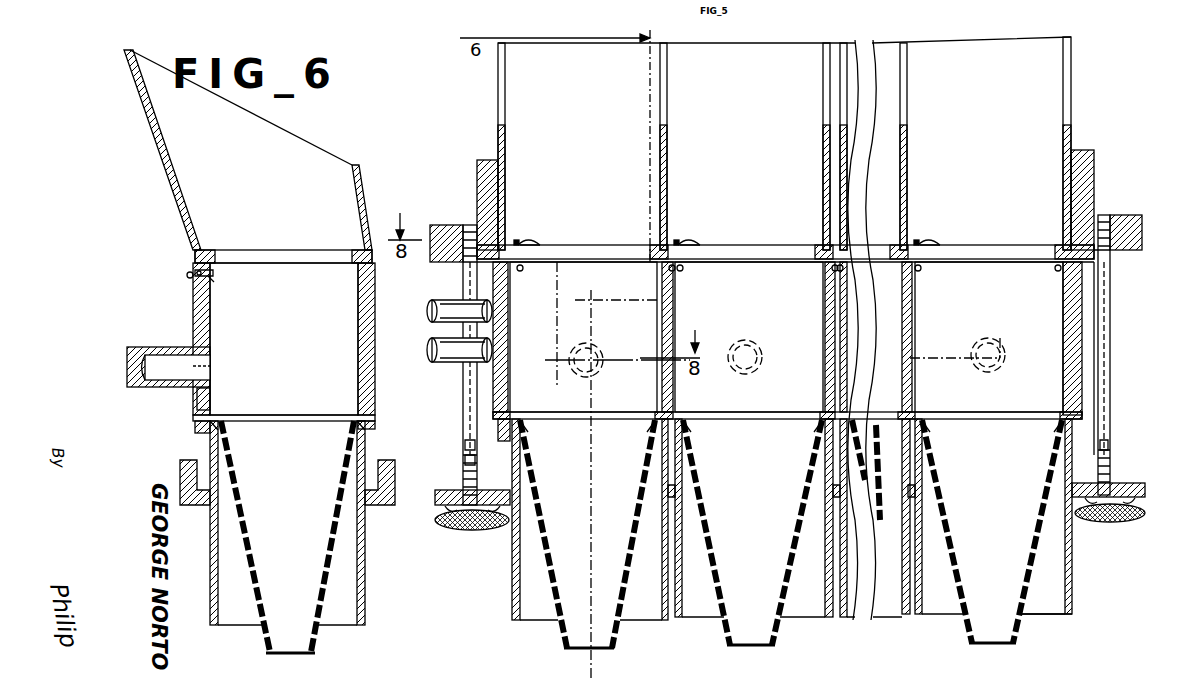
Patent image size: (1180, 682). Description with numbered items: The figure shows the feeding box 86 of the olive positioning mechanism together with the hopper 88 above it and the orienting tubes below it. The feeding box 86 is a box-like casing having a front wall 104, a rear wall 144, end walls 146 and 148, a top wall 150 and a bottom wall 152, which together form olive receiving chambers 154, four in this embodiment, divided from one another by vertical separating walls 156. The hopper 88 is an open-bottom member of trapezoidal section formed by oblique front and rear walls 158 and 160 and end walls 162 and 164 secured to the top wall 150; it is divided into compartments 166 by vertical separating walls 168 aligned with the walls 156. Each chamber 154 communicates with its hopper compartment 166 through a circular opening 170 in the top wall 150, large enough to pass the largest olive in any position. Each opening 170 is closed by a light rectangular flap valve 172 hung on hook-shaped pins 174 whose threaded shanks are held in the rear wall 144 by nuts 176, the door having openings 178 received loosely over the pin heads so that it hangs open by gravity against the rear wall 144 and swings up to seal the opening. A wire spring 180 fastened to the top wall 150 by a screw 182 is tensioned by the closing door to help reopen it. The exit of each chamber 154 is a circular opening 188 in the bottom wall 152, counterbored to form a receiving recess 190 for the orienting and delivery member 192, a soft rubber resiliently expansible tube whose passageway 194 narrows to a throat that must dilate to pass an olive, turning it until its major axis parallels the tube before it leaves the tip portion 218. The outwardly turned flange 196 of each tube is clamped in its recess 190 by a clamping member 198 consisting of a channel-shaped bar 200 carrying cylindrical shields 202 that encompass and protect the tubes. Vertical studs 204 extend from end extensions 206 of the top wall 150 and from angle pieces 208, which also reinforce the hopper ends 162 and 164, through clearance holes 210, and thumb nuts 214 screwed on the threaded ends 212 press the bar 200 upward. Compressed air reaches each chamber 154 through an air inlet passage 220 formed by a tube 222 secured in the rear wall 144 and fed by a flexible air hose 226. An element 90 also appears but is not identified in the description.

In FIG. 5, the feeding box 86 is at (1086, 316).
In FIG. 5, the hopper 88 is at (1072, 66).
In FIG. 5, the lower frame rail 90 is at (1058, 619).
In FIG. 6, the front wall 104 is at (370, 386).
In FIG. 5, the front wall 104 is at (409, 366).
In FIG. 6, the rear wall 144 is at (197, 405).
In FIG. 5, the end wall 146 is at (493, 386).
In FIG. 5, the end wall 148 is at (1078, 378).
In FIG. 6, the top wall 150 is at (193, 262).
In FIG. 5, the top wall 150 is at (442, 288).
In FIG. 6, the bottom wall 152 is at (197, 428).
In FIG. 5, the bottom wall 152 is at (498, 436).
In FIG. 6, the olive receiving chamber 154 is at (356, 348).
In FIG. 5, the olive receiving chamber 154 is at (572, 418).
In FIG. 6, the vertical separating wall 156 is at (287, 311).
In FIG. 5, the vertical separating wall 156 is at (668, 305).
In FIG. 6, the hopper front wall 158 is at (356, 206).
In FIG. 6, the hopper rear wall 160 is at (150, 127).
In FIG. 5, the hopper end wall 162 is at (498, 108).
In FIG. 5, the hopper end wall 164 is at (1071, 104).
In FIG. 6, the hopper compartment 166 is at (348, 200).
In FIG. 5, the hopper compartment 166 is at (658, 119).
In FIG. 6, the vertical separating wall 168 is at (264, 236).
In FIG. 5, the vertical separating wall 168 is at (668, 176).
In FIG. 6, the circular opening 170 is at (304, 262).
In FIG. 5, the circular opening 170 is at (600, 256).
In FIG. 6, the flap valve 172 is at (210, 393).
In FIG. 5, the flap valve 172 is at (632, 328).
In FIG. 6, the hook-shaped pin 174 is at (213, 273).
In FIG. 5, the hook-shaped pin 174 is at (520, 271).
In FIG. 6, the nut 176 is at (190, 279).
In FIG. 6, the opening 178 is at (213, 281).
In FIG. 5, the wire spring 180 is at (541, 241).
In FIG. 5, the screw 182 is at (530, 240).
In FIG. 6, the circular opening 188 is at (326, 420).
In FIG. 5, the circular opening 188 is at (640, 418).
In FIG. 6, the receiving recess 190 is at (375, 424).
In FIG. 5, the receiving recess 190 is at (494, 423).
In FIG. 6, the orienting and delivery member 192 is at (228, 487).
In FIG. 5, the orienting and delivery member 192 is at (645, 485).
In FIG. 6, the passageway 194 is at (300, 497).
In FIG. 5, the passageway 194 is at (577, 473).
In FIG. 6, the outwardly turned flange 196 is at (212, 432).
In FIG. 5, the outwardly turned flange 196 is at (512, 414).
In FIG. 6, the clamping member 198 is at (196, 509).
In FIG. 5, the clamping member 198 is at (448, 497).
In FIG. 6, the channel-shaped bar 200 is at (372, 509).
In FIG. 6, the cylindrical shield 202 is at (365, 590).
In FIG. 5, the cylindrical shield 202 is at (625, 620).
In FIG. 5, the vertical stud 204 is at (465, 405).
In FIG. 5, the end extension 206 is at (448, 262).
In FIG. 5, the angle piece 208 is at (446, 228).
In FIG. 5, the clearance hole 210 is at (478, 492).
In FIG. 5, the threaded end 212 is at (469, 468).
In FIG. 5, the thumb nut 214 is at (470, 531).
In FIG. 6, the tip portion 218 is at (314, 656).
In FIG. 5, the tip portion 218 is at (605, 650).
In FIG. 6, the air inlet passage 220 is at (192, 369).
In FIG. 5, the air inlet passage 220 is at (592, 366).
In FIG. 6, the tube 222 is at (170, 349).
In FIG. 5, the flexible air hose 226 is at (432, 306).